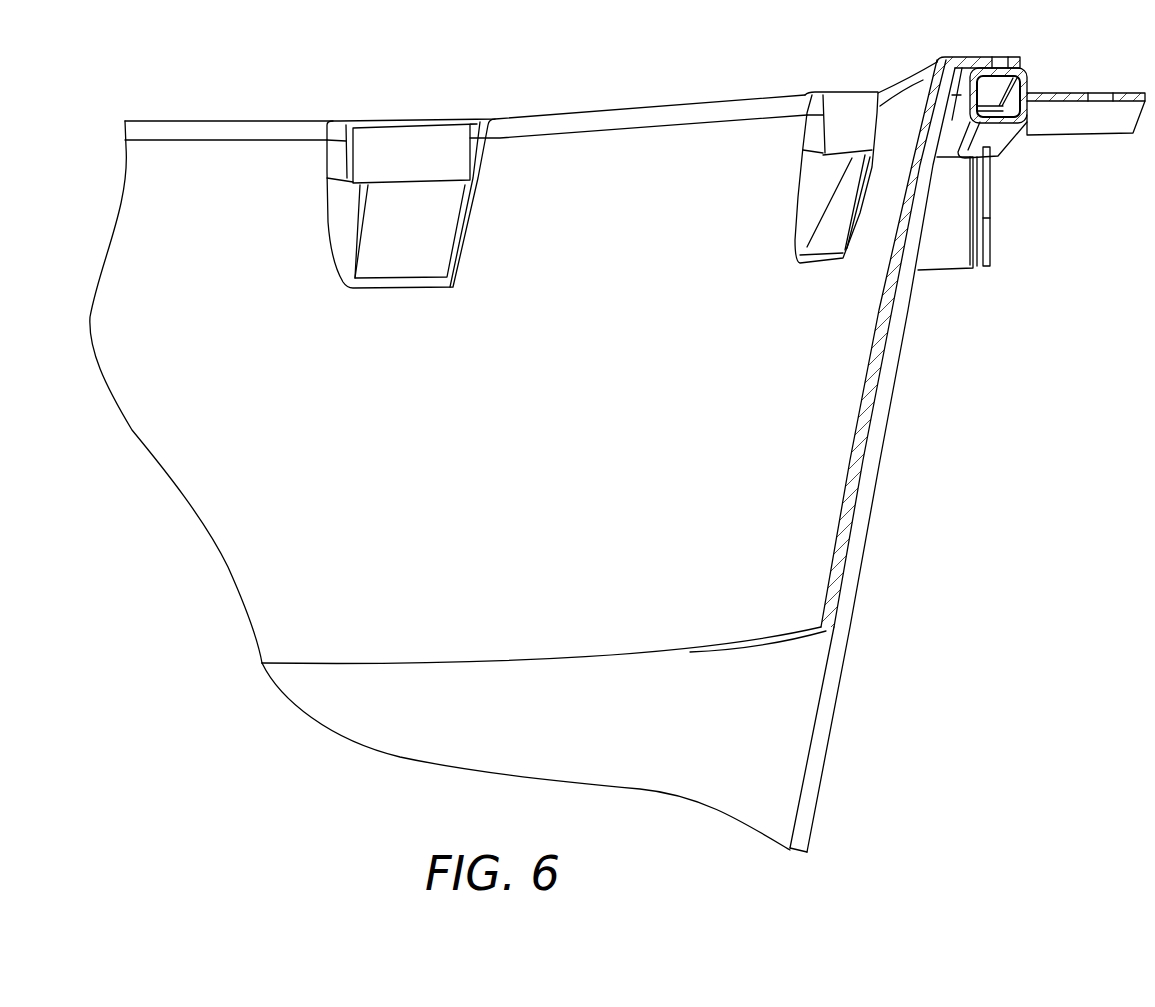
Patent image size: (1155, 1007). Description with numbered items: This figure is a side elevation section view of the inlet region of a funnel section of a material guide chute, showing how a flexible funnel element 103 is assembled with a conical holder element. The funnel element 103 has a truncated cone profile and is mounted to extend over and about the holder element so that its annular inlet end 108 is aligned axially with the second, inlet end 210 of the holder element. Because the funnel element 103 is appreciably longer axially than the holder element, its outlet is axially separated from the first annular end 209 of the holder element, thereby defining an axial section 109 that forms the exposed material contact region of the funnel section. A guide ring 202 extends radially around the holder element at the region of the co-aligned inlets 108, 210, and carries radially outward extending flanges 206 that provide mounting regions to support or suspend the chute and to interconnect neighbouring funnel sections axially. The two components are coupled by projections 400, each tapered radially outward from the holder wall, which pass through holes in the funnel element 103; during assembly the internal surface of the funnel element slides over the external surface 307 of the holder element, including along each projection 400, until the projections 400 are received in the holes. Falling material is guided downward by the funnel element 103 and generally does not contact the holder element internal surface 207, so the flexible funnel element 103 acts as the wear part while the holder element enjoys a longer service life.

The flexible funnel element 103 is at (823, 718).
The annular inlet end 108 is at (943, 57).
The axial section 109 is at (781, 800).
The guide ring 202 is at (1030, 115).
The flange 206 is at (1124, 93).
The holder element internal surface 207 is at (500, 453).
The first annular end 209 is at (547, 670).
The second inlet end 210 is at (728, 103).
The external surface 307 is at (886, 387).
The projection 400 is at (373, 231).